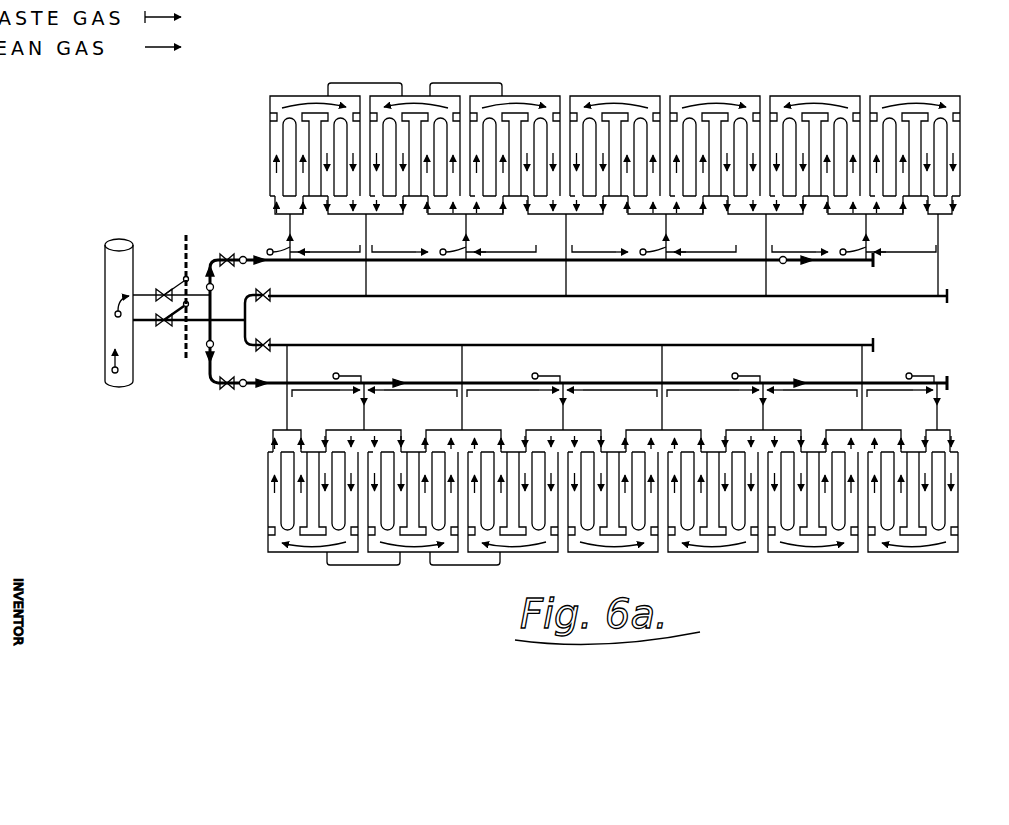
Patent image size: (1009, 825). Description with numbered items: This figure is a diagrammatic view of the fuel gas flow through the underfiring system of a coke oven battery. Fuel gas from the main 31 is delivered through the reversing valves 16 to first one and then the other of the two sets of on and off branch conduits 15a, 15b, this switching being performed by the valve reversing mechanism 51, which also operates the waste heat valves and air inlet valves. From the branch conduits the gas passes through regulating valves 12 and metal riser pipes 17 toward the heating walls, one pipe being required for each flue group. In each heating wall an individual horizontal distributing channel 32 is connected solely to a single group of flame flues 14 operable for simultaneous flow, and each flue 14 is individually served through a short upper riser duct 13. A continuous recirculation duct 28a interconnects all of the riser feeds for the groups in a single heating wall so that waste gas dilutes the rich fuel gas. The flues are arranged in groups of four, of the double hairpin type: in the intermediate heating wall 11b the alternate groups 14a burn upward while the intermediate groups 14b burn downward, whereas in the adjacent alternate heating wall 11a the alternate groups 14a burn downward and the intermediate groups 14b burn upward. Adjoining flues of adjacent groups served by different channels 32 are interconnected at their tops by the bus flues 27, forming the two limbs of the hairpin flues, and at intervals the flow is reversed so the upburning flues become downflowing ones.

The alternate heating wall 11a is at (270, 153).
The intermediate heating wall 11b is at (268, 500).
The regulating valve 12 is at (229, 254).
The riser duct 13 is at (274, 208).
The flame flue 14 is at (323, 179).
The alternate group of flues 14a is at (325, 583).
The intermediate group of flues 14b is at (442, 582).
The branch conduit 15a is at (383, 297).
The branch conduit 15b is at (379, 380).
The reversing valve 16 is at (162, 318).
The metal riser pipe 17 is at (780, 383).
The bus flue 27 is at (670, 97).
The continuous recirculation duct 28a is at (606, 254).
The main 31 is at (105, 332).
The distributing channel 32 is at (383, 214).
The valve reversing mechanism 51 is at (184, 352).